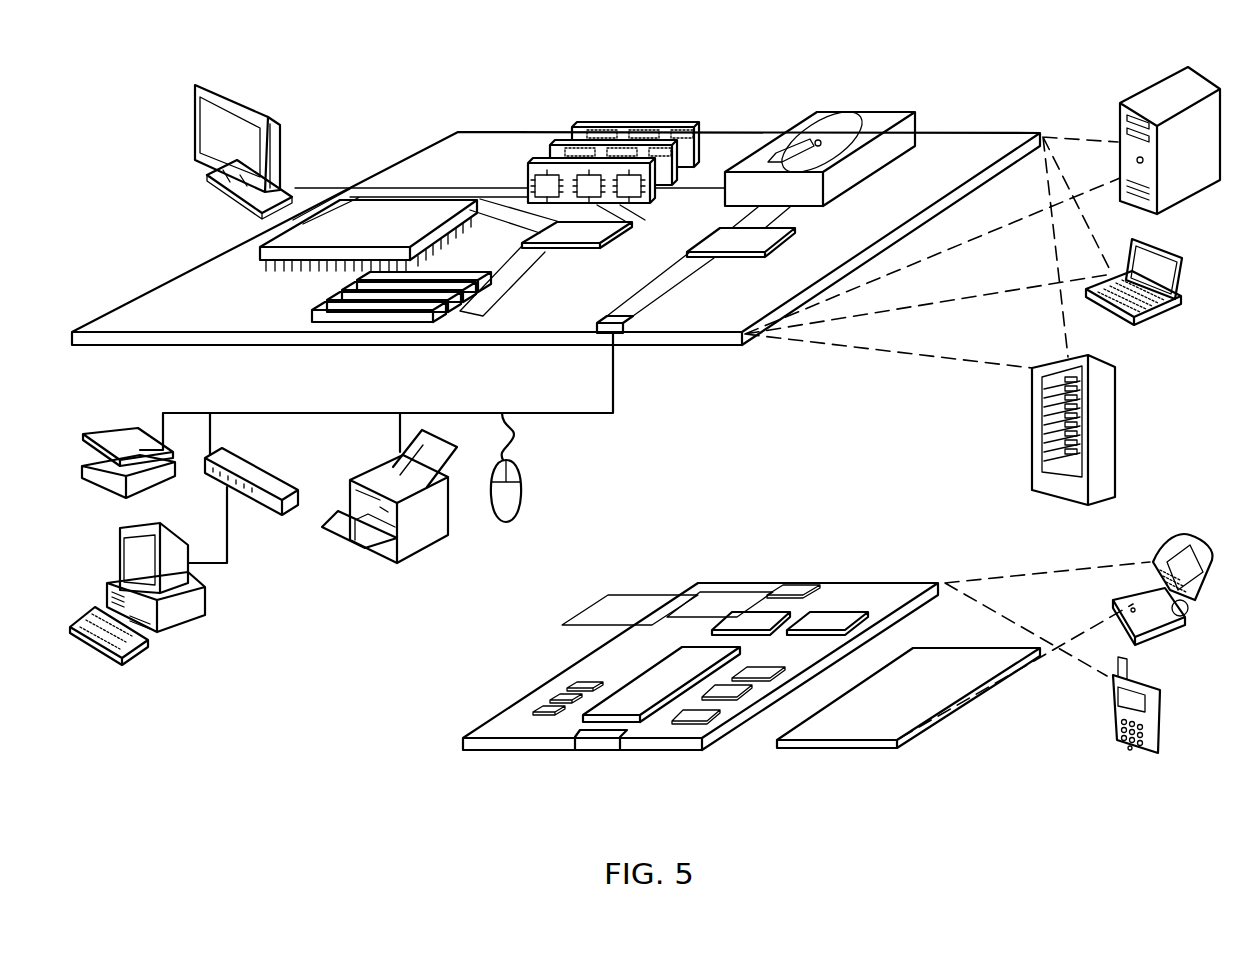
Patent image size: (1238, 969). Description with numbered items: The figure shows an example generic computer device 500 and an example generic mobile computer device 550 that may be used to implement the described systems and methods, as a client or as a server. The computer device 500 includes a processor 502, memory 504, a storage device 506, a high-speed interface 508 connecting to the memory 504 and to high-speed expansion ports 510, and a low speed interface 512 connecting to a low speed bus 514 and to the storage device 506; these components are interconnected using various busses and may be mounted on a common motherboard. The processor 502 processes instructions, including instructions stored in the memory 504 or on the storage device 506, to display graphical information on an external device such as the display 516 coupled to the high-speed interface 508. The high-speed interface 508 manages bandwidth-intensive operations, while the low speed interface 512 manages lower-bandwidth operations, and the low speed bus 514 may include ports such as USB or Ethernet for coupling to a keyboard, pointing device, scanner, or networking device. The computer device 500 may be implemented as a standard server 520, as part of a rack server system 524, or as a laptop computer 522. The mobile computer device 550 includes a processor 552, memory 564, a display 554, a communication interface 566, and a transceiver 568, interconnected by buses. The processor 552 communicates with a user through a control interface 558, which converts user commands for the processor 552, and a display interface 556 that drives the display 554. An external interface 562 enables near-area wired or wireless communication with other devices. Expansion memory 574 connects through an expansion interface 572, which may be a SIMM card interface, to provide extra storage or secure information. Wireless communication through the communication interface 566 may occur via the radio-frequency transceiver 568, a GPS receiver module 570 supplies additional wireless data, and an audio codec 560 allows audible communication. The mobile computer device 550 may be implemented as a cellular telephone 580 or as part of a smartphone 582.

The generic computer device 500 is at (386, 112).
The processor 502 is at (260, 250).
The memory 504 is at (594, 150).
The storage device 506 is at (812, 128).
The high-speed interface 508 is at (548, 240).
The high-speed expansion ports 510 is at (330, 318).
The low speed interface 512 is at (725, 242).
The low speed bus 514 is at (648, 343).
The display 516 is at (201, 84).
The standard server 520 is at (1118, 122).
The laptop computer 522 is at (1178, 262).
The rack server system 524 is at (1031, 455).
The generic mobile computer device 550 is at (442, 745).
The processor 552 is at (630, 712).
The display 554 is at (868, 725).
The display interface 556 is at (705, 716).
The control interface 558 is at (736, 692).
The audio codec 560 is at (760, 680).
The external interface 562 is at (600, 745).
The memory 564 is at (550, 700).
The communication interface 566 is at (748, 622).
The transceiver 568 is at (822, 615).
The GPS receiver module 570 is at (800, 593).
The expansion interface 572 is at (678, 595).
The expansion memory 574 is at (606, 594).
The cellular telephone 580 is at (1168, 542).
The smartphone 582 is at (1110, 712).